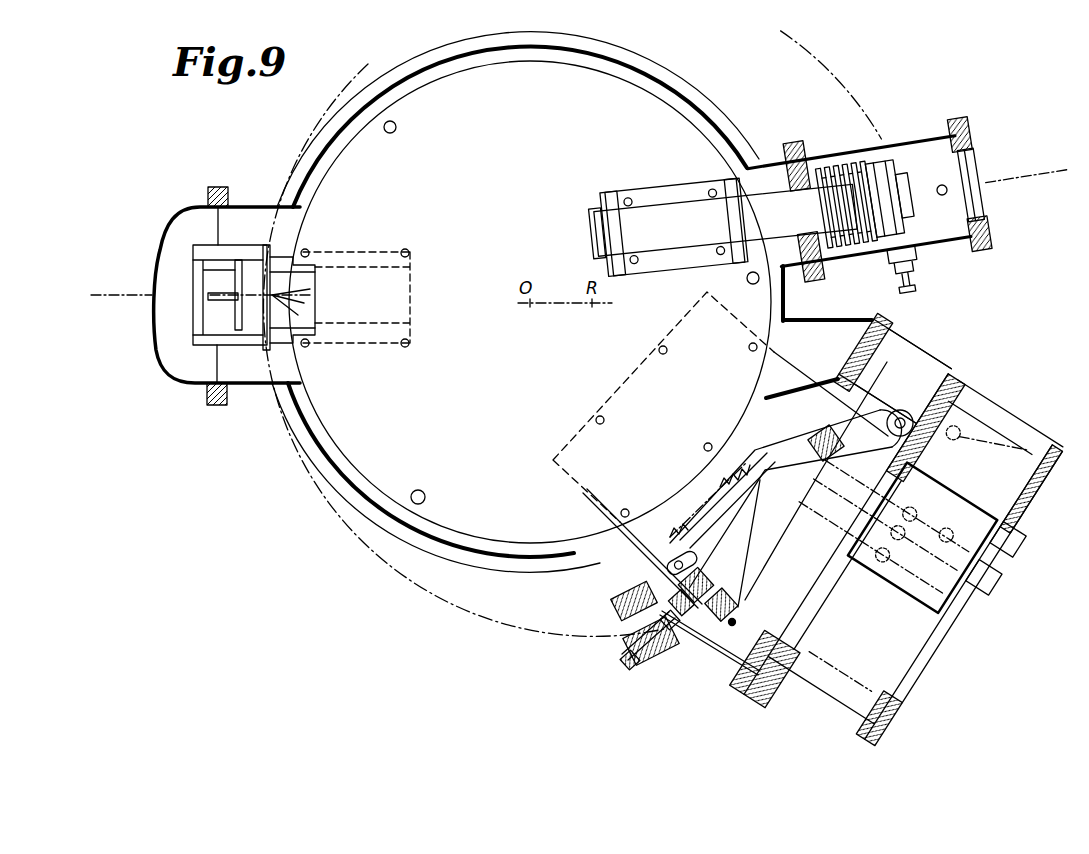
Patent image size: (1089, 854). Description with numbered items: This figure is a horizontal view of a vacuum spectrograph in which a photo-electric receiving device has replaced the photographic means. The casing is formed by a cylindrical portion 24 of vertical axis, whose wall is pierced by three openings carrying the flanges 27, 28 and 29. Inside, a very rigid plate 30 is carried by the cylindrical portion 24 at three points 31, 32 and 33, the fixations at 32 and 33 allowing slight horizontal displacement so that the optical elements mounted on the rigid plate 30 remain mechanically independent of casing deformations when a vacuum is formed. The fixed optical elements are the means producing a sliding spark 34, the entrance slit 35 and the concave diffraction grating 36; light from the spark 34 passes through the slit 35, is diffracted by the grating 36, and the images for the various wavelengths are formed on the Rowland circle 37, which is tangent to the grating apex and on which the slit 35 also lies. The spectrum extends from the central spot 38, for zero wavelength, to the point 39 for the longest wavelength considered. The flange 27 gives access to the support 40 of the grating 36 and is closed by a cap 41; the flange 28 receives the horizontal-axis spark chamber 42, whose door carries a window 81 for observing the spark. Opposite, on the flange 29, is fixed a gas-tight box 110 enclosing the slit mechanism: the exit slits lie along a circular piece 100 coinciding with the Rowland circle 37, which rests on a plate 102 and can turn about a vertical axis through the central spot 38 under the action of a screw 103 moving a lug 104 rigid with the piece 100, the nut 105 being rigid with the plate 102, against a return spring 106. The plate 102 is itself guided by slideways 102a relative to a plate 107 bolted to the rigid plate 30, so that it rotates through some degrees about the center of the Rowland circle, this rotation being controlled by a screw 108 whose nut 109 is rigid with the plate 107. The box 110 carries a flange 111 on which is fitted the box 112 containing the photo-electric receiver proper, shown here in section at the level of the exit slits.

The cylindrical portion 24 is at (683, 104).
The flange 27 is at (228, 193).
The flange 28 is at (795, 148).
The flange 29 is at (877, 324).
The rigid plate 30 is at (345, 403).
The fixation point 31 is at (395, 131).
The fixation point 32 is at (411, 500).
The fixation point 33 is at (747, 278).
The sliding spark 34 is at (942, 185).
The entrance slit 35 is at (905, 188).
The diffraction grating 36 is at (272, 295).
The Rowland circle 37 is at (403, 580).
The central spot 38 is at (900, 410).
The end image point 39 is at (740, 603).
The support 40 is at (222, 308).
The cap 41 is at (158, 258).
The spark chamber 42 is at (838, 152).
The window 81 is at (978, 171).
The circular piece 100 is at (756, 594).
The plate 102 is at (682, 547).
The slideways 102a is at (828, 452).
The screw 103 is at (734, 626).
The lug 104 is at (747, 598).
The nut 105 is at (680, 620).
The return spring 106 is at (702, 588).
The plate 107 is at (785, 378).
The screw 108 is at (656, 579).
The nut 109 is at (618, 594).
The gas-tight box 110 is at (917, 373).
The flange 111 is at (950, 374).
The box 112 is at (1022, 443).